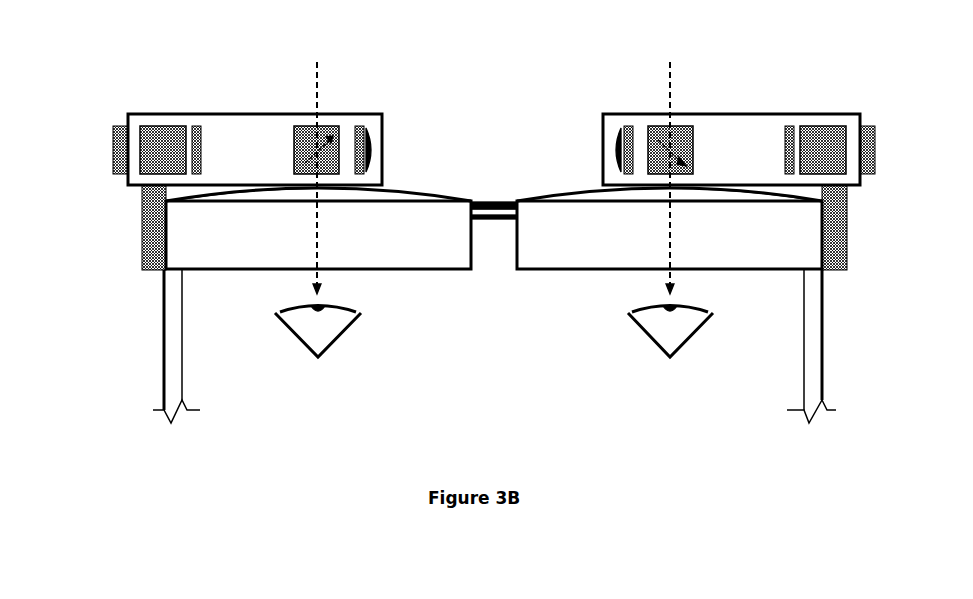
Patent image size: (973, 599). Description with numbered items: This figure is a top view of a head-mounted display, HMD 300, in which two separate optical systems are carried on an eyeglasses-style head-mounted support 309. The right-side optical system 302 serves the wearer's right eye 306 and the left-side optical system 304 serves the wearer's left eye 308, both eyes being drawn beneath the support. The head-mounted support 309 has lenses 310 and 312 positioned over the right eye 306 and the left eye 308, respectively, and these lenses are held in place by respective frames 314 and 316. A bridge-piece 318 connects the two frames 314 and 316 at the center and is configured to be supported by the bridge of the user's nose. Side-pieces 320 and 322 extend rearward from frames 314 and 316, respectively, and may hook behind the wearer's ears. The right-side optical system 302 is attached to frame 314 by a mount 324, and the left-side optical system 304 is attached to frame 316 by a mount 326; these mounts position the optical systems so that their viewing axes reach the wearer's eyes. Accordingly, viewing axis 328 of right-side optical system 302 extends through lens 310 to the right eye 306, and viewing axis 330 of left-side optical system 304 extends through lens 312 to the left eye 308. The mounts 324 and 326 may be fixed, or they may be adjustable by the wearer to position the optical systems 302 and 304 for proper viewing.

The HMD 300 is at (488, 380).
The right-side optical system 302 is at (750, 110).
The left-side optical system 304 is at (214, 112).
The right eye 306 is at (653, 346).
The left eye 308 is at (335, 346).
The head-mounted support 309 is at (484, 178).
The lens 310 is at (578, 193).
The lens 312 is at (402, 193).
The frame 314 is at (760, 270).
The frame 316 is at (237, 270).
The bridge-piece 318 is at (498, 220).
The side-piece 320 is at (826, 350).
The side-piece 322 is at (162, 352).
The mount 324 is at (848, 228).
The mount 326 is at (140, 228).
The viewing axis 328 is at (668, 93).
The viewing axis 330 is at (320, 92).